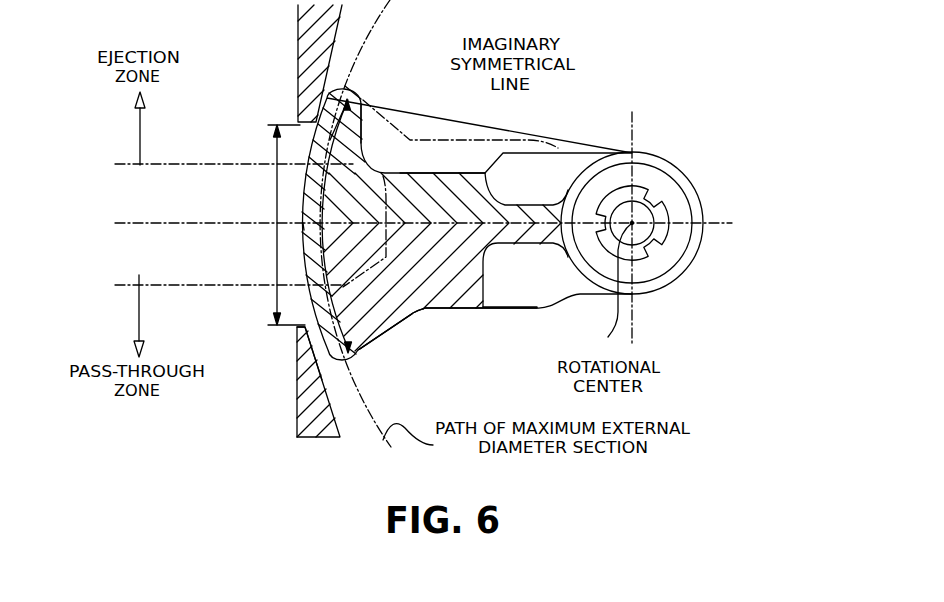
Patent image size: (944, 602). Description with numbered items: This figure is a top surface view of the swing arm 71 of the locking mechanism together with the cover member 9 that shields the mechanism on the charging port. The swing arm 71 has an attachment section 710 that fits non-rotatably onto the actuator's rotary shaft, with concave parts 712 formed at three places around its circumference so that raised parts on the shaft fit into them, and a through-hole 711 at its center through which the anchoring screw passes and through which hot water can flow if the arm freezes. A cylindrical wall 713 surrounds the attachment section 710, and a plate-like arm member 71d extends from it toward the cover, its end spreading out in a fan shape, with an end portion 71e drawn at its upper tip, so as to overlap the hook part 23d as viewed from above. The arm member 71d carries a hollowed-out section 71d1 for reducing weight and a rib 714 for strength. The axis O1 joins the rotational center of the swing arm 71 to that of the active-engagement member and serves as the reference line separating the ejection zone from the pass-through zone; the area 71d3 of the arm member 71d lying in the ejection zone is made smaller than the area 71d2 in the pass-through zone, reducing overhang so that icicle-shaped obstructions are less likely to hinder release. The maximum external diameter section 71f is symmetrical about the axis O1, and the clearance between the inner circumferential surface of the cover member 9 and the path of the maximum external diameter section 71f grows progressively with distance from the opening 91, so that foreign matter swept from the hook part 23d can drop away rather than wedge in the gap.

The cover member 9 is at (297, 414).
The opening 91 is at (300, 317).
The hook part 23d is at (227, 180).
The swing arm 71 is at (558, 137).
The arm member 71d is at (427, 311).
The hollowed-out section 71d1 is at (501, 292).
The area of the arm member in the pass-through zone 71d2 is at (453, 294).
The area of the arm member in the ejection zone 71d3 is at (463, 198).
The protruding end portion 71e is at (354, 165).
The maximum external diameter section 71f is at (303, 242).
The attachment section 710 is at (662, 256).
The through-hole 711 is at (640, 250).
The concave parts 712 is at (658, 200).
The cylindrical wall 713 is at (692, 177).
The rib 714 is at (529, 243).
The axis O1 is at (732, 223).